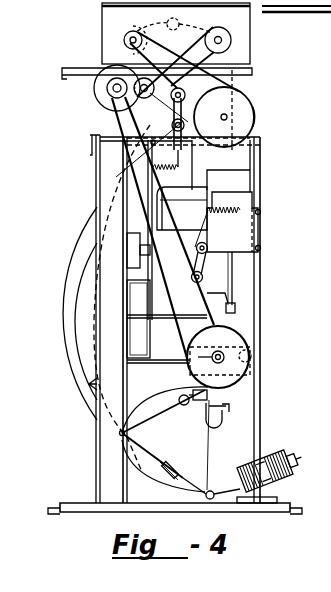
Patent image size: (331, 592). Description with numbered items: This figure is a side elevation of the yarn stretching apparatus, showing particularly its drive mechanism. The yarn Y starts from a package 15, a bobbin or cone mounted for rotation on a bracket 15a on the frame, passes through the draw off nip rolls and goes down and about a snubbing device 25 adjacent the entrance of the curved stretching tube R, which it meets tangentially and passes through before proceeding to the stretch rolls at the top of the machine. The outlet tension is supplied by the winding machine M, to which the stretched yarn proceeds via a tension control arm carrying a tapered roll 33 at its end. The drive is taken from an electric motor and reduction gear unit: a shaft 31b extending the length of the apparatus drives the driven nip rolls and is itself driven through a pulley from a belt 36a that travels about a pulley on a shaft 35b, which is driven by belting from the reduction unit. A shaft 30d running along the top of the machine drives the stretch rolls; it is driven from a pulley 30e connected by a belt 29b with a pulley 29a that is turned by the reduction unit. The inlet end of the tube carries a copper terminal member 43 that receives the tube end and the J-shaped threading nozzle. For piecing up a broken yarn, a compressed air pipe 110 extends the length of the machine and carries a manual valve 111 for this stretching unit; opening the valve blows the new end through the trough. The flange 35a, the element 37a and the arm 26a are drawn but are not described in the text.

The pulley 29a is at (124, 40).
The belt 29b is at (238, 73).
The shaft 30d is at (227, 115).
The pulley 30e is at (255, 122).
The pulley flange 35a is at (103, 99).
The shaft 35b is at (113, 88).
The belt 36a is at (132, 187).
The curved stretching tube R is at (74, 250).
The winding machine M is at (237, 202).
The yarn Y is at (230, 268).
The tapered roll 33 is at (232, 306).
The shaft 31b is at (195, 353).
The bearing 37a is at (244, 382).
The manual valve 111 is at (214, 408).
The compressed air pipe 110 is at (215, 420).
The arm 26a is at (164, 439).
The copper terminal member 43 is at (175, 467).
The snubbing device 25 is at (212, 491).
The package 15 is at (266, 462).
The bracket 15a is at (244, 503).